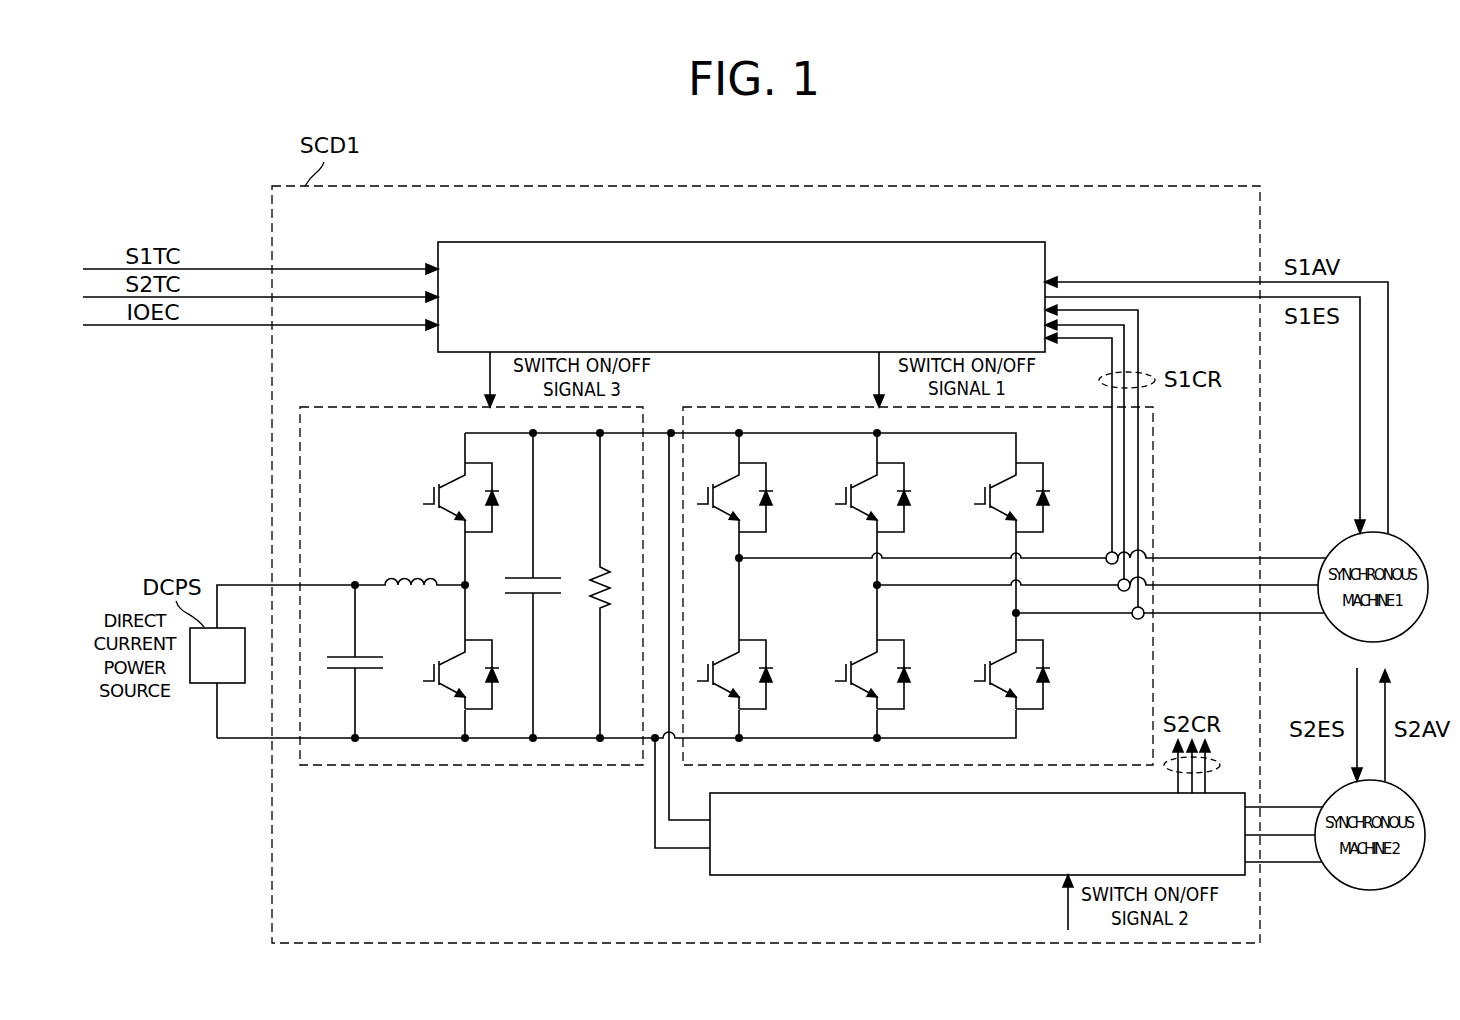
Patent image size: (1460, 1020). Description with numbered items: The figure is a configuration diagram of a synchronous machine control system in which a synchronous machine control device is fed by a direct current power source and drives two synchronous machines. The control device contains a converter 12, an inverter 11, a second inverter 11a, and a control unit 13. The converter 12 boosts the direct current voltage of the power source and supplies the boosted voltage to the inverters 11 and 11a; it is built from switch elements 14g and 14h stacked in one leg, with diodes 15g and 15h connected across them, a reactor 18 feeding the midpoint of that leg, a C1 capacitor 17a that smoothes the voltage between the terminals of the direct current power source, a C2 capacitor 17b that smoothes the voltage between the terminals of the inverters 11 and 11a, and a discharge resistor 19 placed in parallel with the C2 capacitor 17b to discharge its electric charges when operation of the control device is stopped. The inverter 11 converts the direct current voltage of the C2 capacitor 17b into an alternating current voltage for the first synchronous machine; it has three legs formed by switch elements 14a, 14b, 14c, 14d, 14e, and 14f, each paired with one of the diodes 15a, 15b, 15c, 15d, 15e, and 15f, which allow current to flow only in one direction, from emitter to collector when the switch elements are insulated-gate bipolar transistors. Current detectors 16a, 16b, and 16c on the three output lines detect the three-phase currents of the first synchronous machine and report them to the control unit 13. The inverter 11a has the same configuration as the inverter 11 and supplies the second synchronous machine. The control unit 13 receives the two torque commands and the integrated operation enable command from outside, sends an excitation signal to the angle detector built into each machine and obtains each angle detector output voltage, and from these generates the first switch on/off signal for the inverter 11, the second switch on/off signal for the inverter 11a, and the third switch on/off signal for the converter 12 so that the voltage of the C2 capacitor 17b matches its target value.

The inverter 11 is at (689, 407).
The inverter 11a is at (736, 878).
The converter 12 is at (306, 407).
The control unit 13 is at (446, 242).
The switch element 14a is at (729, 480).
The switch element 14b is at (729, 664).
The switch element 14c is at (867, 480).
The switch element 14d is at (867, 664).
The switch element 14e is at (1006, 480).
The switch element 14f is at (1006, 664).
The switch element 14g is at (455, 480).
The switch element 14h is at (455, 664).
The diode 15a is at (771, 509).
The diode 15b is at (771, 686).
The diode 15c is at (909, 509).
The diode 15d is at (909, 686).
The diode 15e is at (1048, 509).
The diode 15f is at (1048, 686).
The diode 15g is at (497, 509).
The diode 15h is at (497, 686).
The current detector 16a is at (1104, 562).
The current detector 16b is at (1116, 589).
The current detector 16c is at (1130, 617).
The C1 capacitor 17a is at (343, 655).
The C2 capacitor 17b is at (538, 599).
The reactor 18 is at (388, 578).
The discharge resistor 19 is at (590, 576).